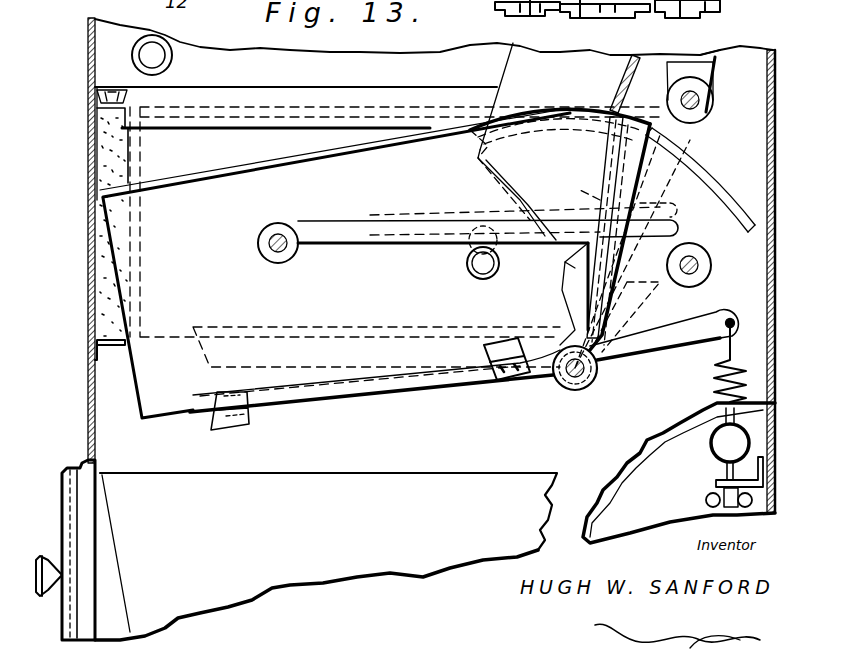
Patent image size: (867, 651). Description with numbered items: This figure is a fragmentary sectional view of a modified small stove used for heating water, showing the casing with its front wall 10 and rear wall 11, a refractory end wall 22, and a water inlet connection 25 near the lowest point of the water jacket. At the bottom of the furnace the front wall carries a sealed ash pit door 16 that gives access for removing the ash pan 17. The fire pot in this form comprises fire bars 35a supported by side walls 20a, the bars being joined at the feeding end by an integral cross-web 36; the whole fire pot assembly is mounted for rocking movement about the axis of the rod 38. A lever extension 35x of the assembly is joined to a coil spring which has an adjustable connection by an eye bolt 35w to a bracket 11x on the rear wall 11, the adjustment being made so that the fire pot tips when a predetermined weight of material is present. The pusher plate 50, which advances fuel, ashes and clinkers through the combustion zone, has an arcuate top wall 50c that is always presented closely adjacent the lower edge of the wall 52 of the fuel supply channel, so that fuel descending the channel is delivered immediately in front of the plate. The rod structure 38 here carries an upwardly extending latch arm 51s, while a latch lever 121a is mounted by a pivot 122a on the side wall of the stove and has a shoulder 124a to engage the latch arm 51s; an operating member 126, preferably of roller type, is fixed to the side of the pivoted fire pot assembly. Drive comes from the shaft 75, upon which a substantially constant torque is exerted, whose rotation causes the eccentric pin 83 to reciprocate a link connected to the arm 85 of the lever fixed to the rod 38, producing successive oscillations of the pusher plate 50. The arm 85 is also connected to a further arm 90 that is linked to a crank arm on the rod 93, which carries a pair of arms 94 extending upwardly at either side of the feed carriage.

The front wall 10 is at (88, 55).
The rear wall 11 is at (767, 118).
The sealed ash pit door 16 is at (62, 517).
The ash pan 17 is at (326, 556).
The side walls 20a is at (377, 262).
The refractory end wall 22 is at (112, 158).
The water inlet connection 25 is at (172, 60).
The fire bars 35a is at (372, 393).
The eye bolt 35w is at (714, 452).
The lever extension 35x is at (655, 331).
The cross-web 36 is at (556, 340).
The rod 38 is at (568, 384).
The pusher plate 50 is at (532, 198).
The arcuate top wall 50c is at (722, 175).
The latch arm 51s is at (563, 287).
The wall 52 is at (625, 76).
The shaft 75 is at (697, 256).
The eccentric pin 83 is at (708, 12).
The arm 85 is at (634, 8).
The arm 90 is at (527, 16).
The rod 93 is at (699, 91).
The arms 94 is at (708, 50).
The bracket 11x is at (712, 485).
The latch lever 121a is at (365, 225).
The pivot 122a is at (280, 232).
The shoulder 124a is at (575, 220).
The operating member 126 is at (466, 262).